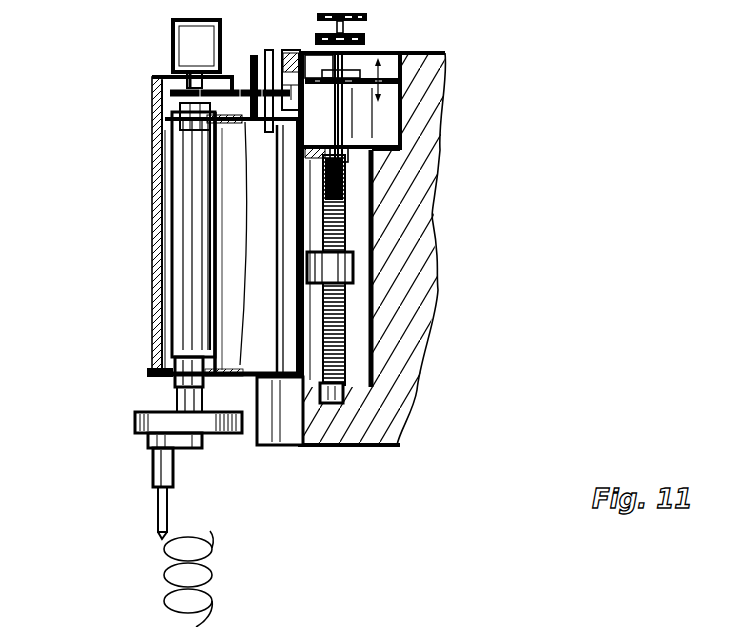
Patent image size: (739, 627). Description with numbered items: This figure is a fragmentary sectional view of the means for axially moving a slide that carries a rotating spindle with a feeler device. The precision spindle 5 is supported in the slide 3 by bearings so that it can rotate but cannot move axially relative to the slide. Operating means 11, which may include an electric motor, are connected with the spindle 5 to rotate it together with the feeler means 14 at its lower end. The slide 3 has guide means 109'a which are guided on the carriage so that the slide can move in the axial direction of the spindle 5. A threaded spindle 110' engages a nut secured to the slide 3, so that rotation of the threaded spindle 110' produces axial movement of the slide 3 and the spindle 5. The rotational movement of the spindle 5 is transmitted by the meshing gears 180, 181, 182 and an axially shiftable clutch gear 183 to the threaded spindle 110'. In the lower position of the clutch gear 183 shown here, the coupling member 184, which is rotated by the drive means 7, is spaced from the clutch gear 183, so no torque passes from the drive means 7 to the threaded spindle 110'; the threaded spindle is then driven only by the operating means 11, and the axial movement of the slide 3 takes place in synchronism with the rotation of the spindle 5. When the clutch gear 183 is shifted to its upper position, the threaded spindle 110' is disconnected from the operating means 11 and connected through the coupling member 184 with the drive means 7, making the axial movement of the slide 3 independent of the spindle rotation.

The operating means 11 is at (188, 57).
The meshing gear 180 is at (215, 98).
The meshing gear 181 is at (240, 103).
The meshing gear 182 is at (233, 76).
The drive means 7 is at (367, 17).
The coupling member 184 is at (363, 40).
The clutch gear 183 is at (400, 85).
The slide 3 is at (263, 257).
The precision spindle 5 is at (187, 333).
The guide means 109'a is at (429, 282).
The threaded spindle 110' is at (436, 279).
The feeler means 14 is at (160, 512).